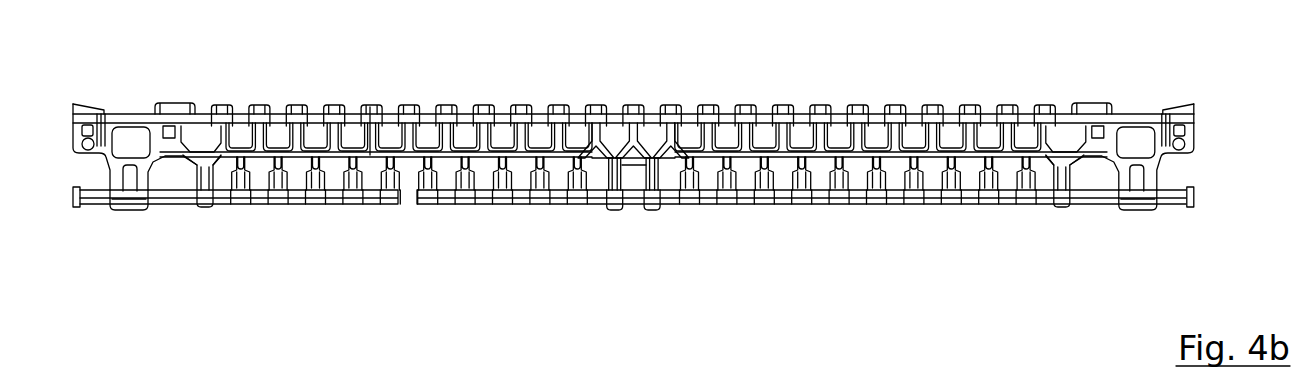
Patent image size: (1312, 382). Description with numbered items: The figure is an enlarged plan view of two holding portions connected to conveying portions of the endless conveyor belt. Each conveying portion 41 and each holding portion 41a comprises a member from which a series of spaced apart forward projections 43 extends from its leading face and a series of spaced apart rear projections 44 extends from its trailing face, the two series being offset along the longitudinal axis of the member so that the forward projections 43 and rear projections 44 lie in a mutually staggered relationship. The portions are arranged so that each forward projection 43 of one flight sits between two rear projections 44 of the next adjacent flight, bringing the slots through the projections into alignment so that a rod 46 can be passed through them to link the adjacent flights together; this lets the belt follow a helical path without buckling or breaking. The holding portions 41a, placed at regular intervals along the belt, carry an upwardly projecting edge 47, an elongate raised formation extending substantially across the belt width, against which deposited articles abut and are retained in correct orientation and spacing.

The conveying portion 41 is at (652, 208).
The holding portion 41a is at (557, 107).
The forward projection 43 is at (633, 108).
The rear projection 44 is at (583, 204).
The rod 46 is at (1172, 127).
The upwardly projecting edge 47 is at (222, 158).